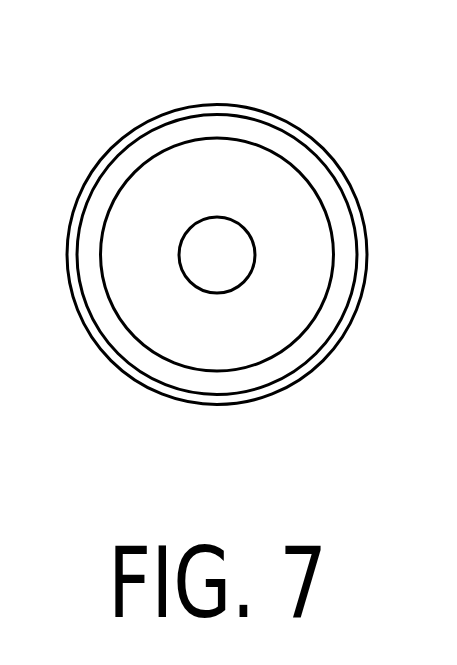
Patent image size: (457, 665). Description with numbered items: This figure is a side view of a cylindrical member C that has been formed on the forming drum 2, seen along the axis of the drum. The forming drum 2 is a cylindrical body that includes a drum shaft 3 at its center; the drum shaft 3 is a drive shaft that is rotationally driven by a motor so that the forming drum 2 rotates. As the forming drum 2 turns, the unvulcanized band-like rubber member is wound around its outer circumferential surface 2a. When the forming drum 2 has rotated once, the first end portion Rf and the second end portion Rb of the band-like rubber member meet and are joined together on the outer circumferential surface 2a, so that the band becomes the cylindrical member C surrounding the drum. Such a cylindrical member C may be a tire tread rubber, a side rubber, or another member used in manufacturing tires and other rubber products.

The forming drum 2 is at (338, 181).
The outer circumferential surface 2a is at (97, 165).
The drum shaft 3 is at (208, 270).
The cylindrical member C is at (279, 113).
The second end portion Rb is at (199, 109).
The first end portion Rf is at (202, 107).